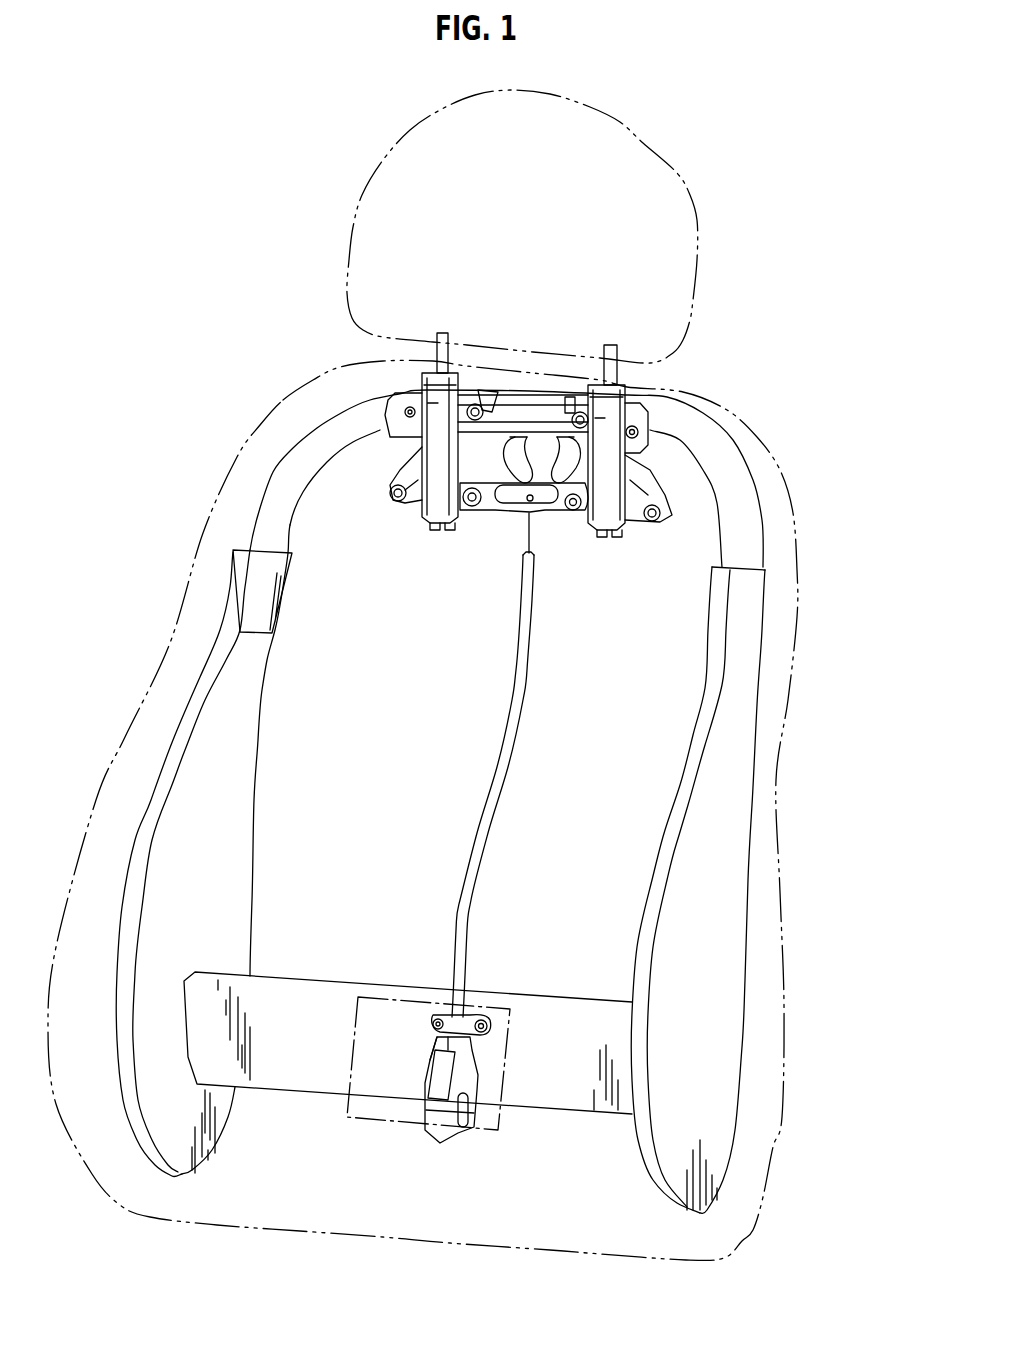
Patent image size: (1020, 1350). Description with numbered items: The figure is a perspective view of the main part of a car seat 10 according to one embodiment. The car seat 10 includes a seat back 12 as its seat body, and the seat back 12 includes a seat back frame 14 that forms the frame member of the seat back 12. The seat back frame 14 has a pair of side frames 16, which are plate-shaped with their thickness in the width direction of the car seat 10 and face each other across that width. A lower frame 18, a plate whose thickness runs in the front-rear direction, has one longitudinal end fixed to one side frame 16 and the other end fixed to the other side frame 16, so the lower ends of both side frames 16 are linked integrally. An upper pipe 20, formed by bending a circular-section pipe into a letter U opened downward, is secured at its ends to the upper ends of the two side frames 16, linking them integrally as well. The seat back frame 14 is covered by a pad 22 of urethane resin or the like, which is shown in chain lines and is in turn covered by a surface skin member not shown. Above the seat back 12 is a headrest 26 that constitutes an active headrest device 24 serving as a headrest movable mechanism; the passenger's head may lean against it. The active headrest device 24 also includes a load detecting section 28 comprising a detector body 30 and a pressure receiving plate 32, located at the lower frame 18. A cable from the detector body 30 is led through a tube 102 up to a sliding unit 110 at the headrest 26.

The car seat 10 is at (776, 258).
The seat back 12 is at (803, 734).
The seat back frame 14 is at (712, 945).
The side frame 16 is at (243, 829).
The lower frame 18 is at (320, 987).
The upper pipe 20 is at (733, 493).
The pad 22 is at (797, 617).
The active headrest device 24 is at (598, 612).
The headrest 26 is at (680, 177).
The load detecting section 28 is at (530, 1057).
The detector body 30 is at (487, 1090).
The pressure receiving plate 32 is at (392, 993).
The tube 102 is at (522, 720).
The sliding unit 110 is at (428, 540).